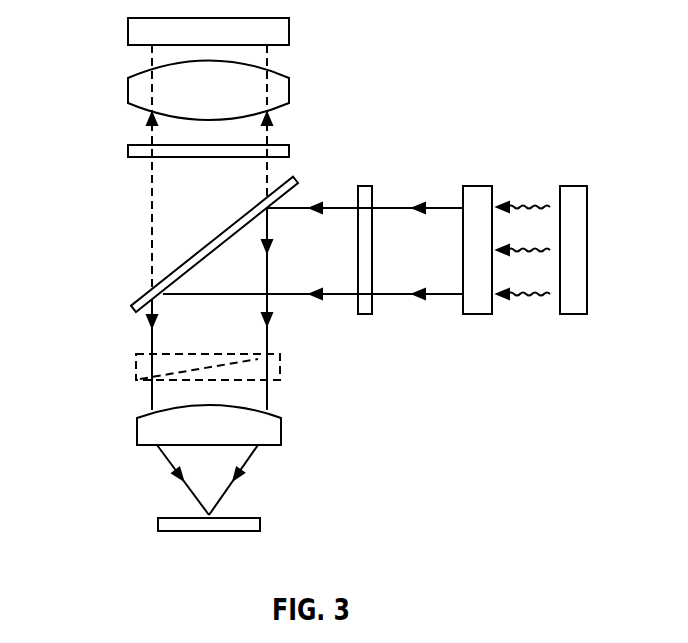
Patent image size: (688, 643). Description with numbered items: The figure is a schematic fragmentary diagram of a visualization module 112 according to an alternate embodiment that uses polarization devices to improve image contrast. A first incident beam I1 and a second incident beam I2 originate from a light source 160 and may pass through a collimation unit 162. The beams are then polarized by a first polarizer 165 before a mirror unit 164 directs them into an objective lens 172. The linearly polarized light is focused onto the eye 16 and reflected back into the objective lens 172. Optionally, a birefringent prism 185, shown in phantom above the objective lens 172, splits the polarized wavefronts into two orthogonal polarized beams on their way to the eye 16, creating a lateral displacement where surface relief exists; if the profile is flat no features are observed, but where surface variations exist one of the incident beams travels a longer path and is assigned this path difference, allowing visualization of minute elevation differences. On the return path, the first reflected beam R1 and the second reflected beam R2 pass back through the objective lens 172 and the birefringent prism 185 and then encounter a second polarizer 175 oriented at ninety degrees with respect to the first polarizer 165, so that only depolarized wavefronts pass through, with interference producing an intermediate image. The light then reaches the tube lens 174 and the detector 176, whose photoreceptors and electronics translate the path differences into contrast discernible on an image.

The visualization module 112 is at (433, 37).
The detector 176 is at (116, 31).
The tube lens 174 is at (116, 88).
The second polarizer 175 is at (116, 150).
The second reflected beam R2 is at (150, 225).
The first reflected beam R1 is at (262, 165).
The mirror unit 164 is at (170, 270).
The first incident beam I1 is at (288, 209).
The second incident beam I2 is at (212, 295).
The birefringent prism 185 is at (122, 367).
The objective lens 172 is at (306, 438).
The eye 16 is at (273, 526).
The first polarizer 165 is at (365, 330).
The collimation unit 162 is at (477, 330).
The light source 160 is at (571, 330).